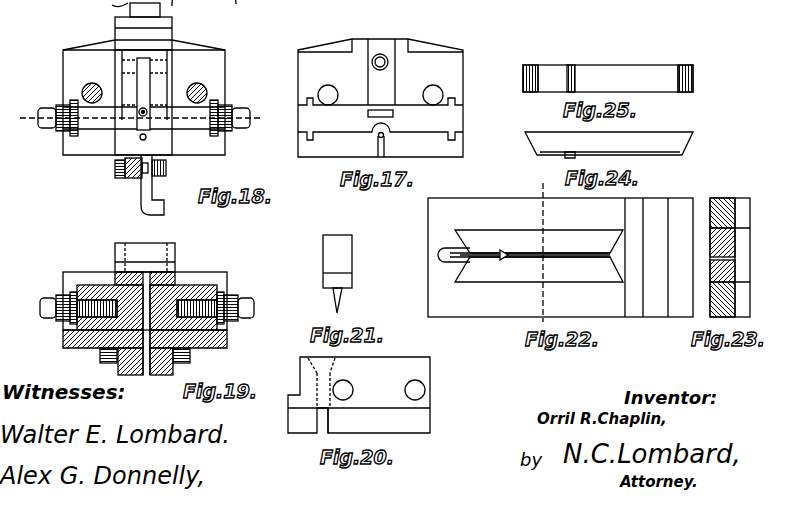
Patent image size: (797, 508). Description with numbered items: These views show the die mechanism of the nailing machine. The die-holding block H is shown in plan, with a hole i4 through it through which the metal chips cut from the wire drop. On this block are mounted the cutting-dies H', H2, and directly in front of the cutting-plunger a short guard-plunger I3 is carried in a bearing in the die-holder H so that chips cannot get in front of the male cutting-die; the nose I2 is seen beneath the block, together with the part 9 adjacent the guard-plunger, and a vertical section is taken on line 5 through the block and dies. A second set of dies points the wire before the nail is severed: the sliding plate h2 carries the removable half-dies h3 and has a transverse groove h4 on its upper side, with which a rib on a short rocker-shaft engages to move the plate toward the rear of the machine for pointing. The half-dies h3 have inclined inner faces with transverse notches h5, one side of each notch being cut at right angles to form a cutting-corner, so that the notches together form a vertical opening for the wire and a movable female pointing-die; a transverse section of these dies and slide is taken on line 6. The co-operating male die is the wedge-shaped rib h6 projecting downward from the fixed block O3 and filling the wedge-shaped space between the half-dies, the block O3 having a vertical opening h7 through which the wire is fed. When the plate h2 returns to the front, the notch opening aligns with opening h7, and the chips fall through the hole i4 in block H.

In FIG. 18, the die-holding block H is at (144, 97).
In FIG. 19, the die-holding block H is at (153, 340).
In FIG. 17, the die-holding block H is at (380, 98).
In FIG. 18, the sliding plate h2 is at (143, 79).
In FIG. 19, the sliding plate h2 is at (97, 283).
In FIG. 22, the sliding plate h2 is at (560, 257).
In FIG. 23, the sliding plate h2 is at (725, 203).
In FIG. 18, the half-dies h3 is at (143, 99).
In FIG. 25, the half-dies h3 is at (608, 78).
In FIG. 24, the half-dies h3 is at (609, 143).
In FIG. 22, the half-dies h3 is at (539, 256).
In FIG. 23, the half-dies h3 is at (735, 246).
In FIG. 18, the transverse groove h4 is at (166, 35).
In FIG. 22, the transverse groove h4 is at (646, 257).
In FIG. 25, the notches h5 is at (573, 68).
In FIG. 24, the notches h5 is at (571, 157).
In FIG. 22, the notches h5 is at (524, 259).
In FIG. 21, the wedge-shaped rib h6 is at (340, 292).
In FIG. 20, the wedge-shaped rib h6 is at (355, 420).
In FIG. 18, the vertical opening h7 is at (152, 114).
In FIG. 20, the vertical opening h7 is at (312, 358).
In FIG. 18, the section line 5 is at (139, 118).
In FIG. 22, the section line 6 is at (527, 322).
In FIG. 18, the nut 9 is at (129, 178).
In FIG. 18, the short plunger I3 is at (142, 178).
In FIG. 19, the nose I2 is at (160, 372).
In FIG. 19, the block O3 is at (145, 252).
In FIG. 21, the block O3 is at (337, 261).
In FIG. 20, the block O3 is at (359, 395).
In FIG. 19, the cutting-die H' is at (145, 291).
In FIG. 19, the cutting-die H2 is at (182, 283).
In FIG. 17, the hole i4 is at (378, 110).